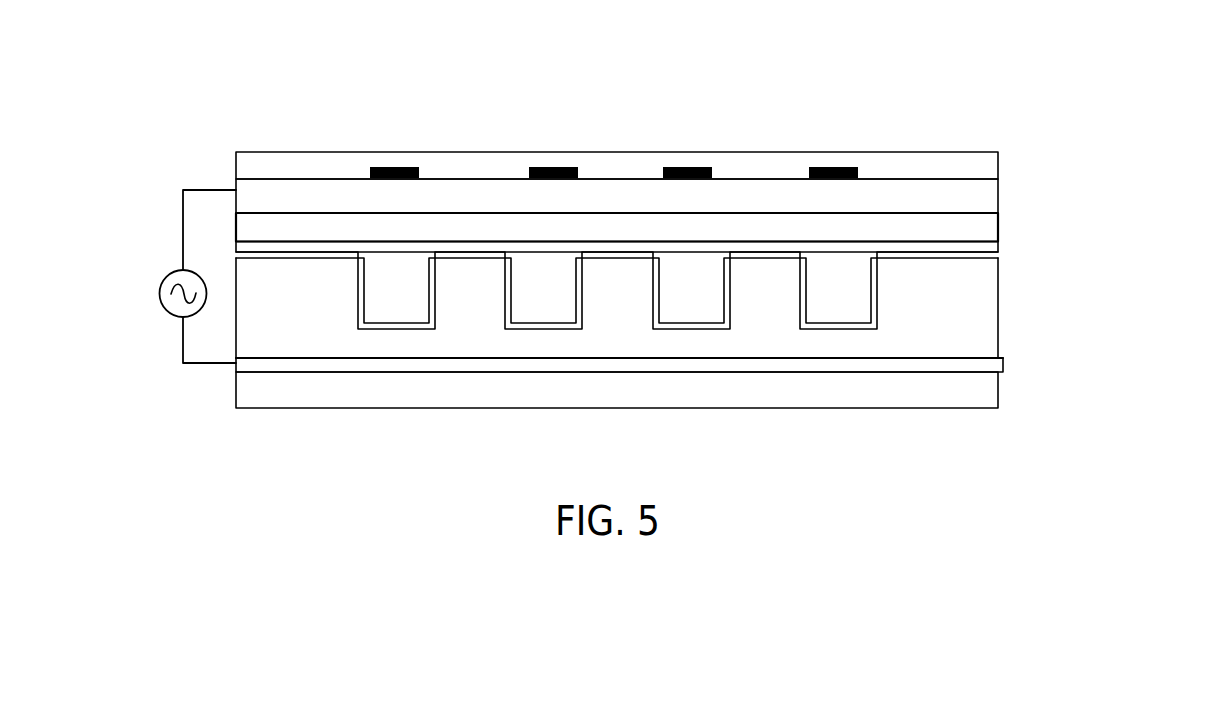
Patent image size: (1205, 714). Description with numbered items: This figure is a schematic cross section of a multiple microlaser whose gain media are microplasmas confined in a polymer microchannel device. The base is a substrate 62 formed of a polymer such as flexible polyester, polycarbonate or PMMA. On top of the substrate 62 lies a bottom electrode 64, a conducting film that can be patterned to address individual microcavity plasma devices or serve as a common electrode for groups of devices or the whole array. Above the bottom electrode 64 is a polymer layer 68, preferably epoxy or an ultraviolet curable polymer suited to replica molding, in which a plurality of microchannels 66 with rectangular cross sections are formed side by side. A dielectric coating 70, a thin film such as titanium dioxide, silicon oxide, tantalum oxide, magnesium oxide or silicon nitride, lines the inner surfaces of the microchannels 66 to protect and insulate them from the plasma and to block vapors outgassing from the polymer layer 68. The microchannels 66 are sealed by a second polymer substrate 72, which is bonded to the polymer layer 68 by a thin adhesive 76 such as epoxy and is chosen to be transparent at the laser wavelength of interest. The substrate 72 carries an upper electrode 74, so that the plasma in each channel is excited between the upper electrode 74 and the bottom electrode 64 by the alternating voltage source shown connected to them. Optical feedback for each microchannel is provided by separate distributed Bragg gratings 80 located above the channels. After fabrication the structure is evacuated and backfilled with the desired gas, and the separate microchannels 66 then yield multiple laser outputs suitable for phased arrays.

The substrate 62 is at (998, 387).
The bottom electrode 64 is at (1003, 363).
The microchannels 66 is at (387, 275).
The polymer layer 68 is at (989, 323).
The dielectric coating 70 is at (407, 327).
The second polymer substrate 72 is at (998, 228).
The upper electrode 74 is at (998, 202).
The thin adhesive 76 is at (992, 256).
The distributed Bragg gratings 80 is at (394, 167).